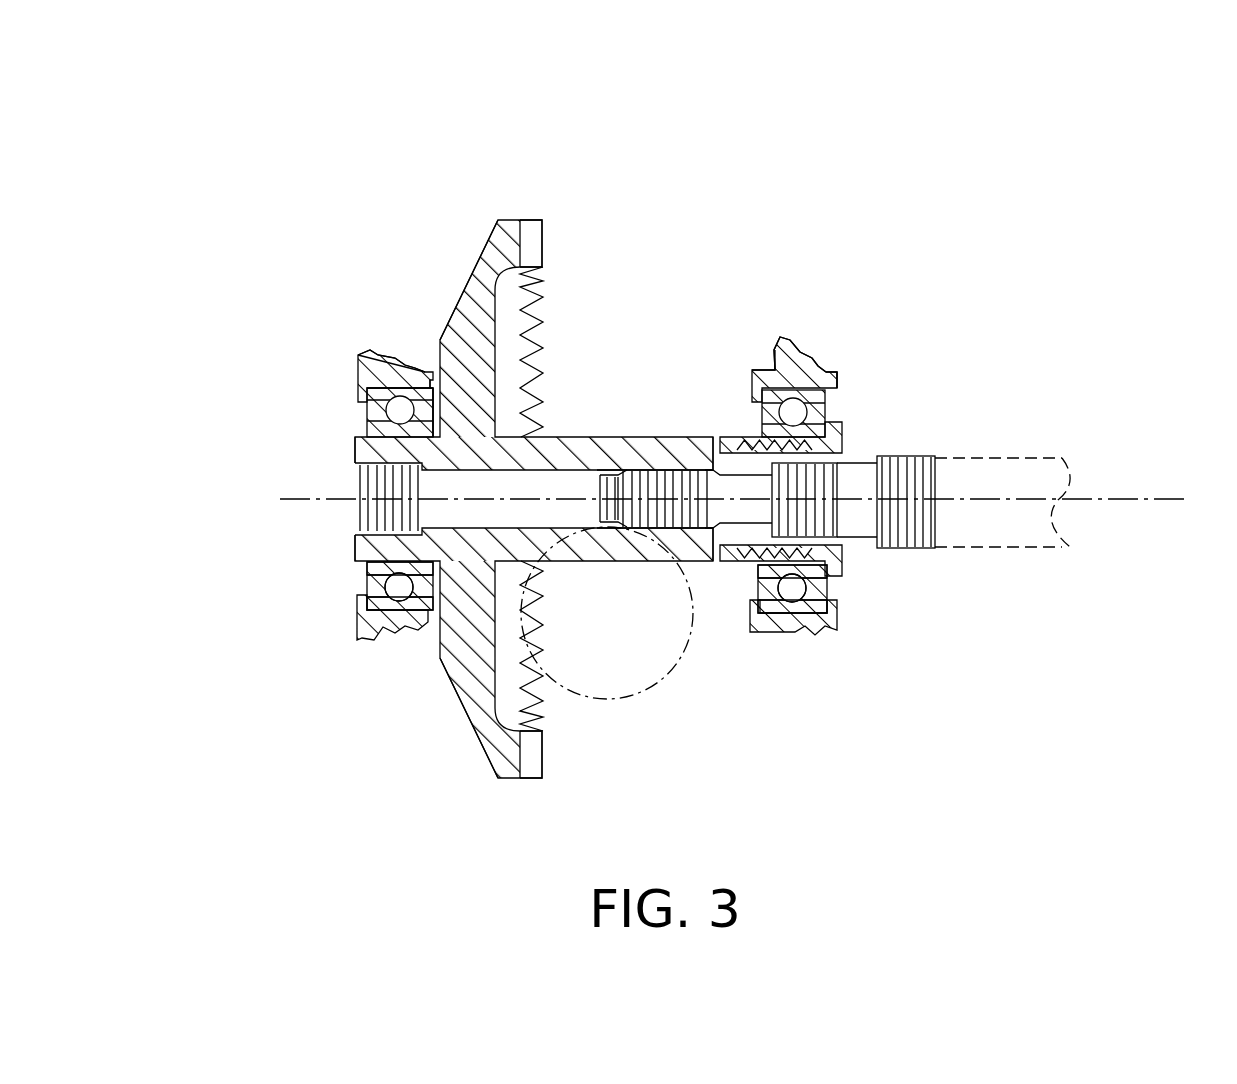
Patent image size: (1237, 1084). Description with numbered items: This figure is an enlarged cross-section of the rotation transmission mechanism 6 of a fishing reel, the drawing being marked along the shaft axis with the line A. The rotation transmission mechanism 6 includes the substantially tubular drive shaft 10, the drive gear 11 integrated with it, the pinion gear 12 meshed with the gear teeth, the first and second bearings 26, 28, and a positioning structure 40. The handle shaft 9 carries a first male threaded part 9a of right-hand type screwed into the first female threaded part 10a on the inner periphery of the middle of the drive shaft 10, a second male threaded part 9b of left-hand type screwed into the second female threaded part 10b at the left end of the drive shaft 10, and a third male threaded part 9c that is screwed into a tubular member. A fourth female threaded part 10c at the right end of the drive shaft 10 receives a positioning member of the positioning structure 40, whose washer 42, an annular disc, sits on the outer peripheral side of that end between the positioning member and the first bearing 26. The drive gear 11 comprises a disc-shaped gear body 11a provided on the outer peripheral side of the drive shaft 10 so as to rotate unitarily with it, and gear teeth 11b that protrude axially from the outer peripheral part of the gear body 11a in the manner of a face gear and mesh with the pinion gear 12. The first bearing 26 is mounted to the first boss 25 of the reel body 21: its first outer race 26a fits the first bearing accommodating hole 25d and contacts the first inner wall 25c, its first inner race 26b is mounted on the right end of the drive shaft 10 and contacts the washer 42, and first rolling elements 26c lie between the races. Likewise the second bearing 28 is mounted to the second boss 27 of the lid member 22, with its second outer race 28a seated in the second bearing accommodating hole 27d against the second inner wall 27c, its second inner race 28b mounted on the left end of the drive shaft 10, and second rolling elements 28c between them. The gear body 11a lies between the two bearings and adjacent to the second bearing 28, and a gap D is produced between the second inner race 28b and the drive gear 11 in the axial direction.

The rotation transmission mechanism 6 is at (388, 158).
The handle shaft 9 is at (1006, 406).
The first male threaded part 9a is at (690, 520).
The second male threaded part 9b is at (880, 540).
The third male threaded part 9c is at (920, 548).
The drive shaft 10 is at (636, 418).
The first female threaded part 10a is at (655, 517).
The second female threaded part 10b is at (356, 515).
The fourth female threaded part 10c is at (745, 455).
The drive gear 11 is at (550, 164).
The gear body 11a is at (485, 263).
The gear teeth 11b is at (537, 233).
The pinion gear 12 is at (608, 700).
The reel body 21 is at (852, 347).
The lid member 22 is at (324, 374).
The first boss 25 is at (790, 350).
The first inner wall 25c is at (768, 400).
The first bearing accommodating hole 25d is at (840, 398).
The first bearing 26 is at (992, 770).
The first outer race 26a is at (812, 610).
The first inner race 26b is at (823, 580).
The first rolling element 26c is at (792, 597).
The second boss 27 is at (383, 368).
The second inner wall 27c is at (392, 380).
The second bearing accommodating hole 27d is at (437, 413).
The second bearing 28 is at (339, 414).
The second outer race 28a is at (383, 607).
The second inner race 28b is at (420, 572).
The second rolling element 28c is at (398, 596).
The positioning structure 40 is at (885, 404).
The washer 42 is at (842, 530).
The axis A is at (720, 499).
The gap D is at (437, 353).